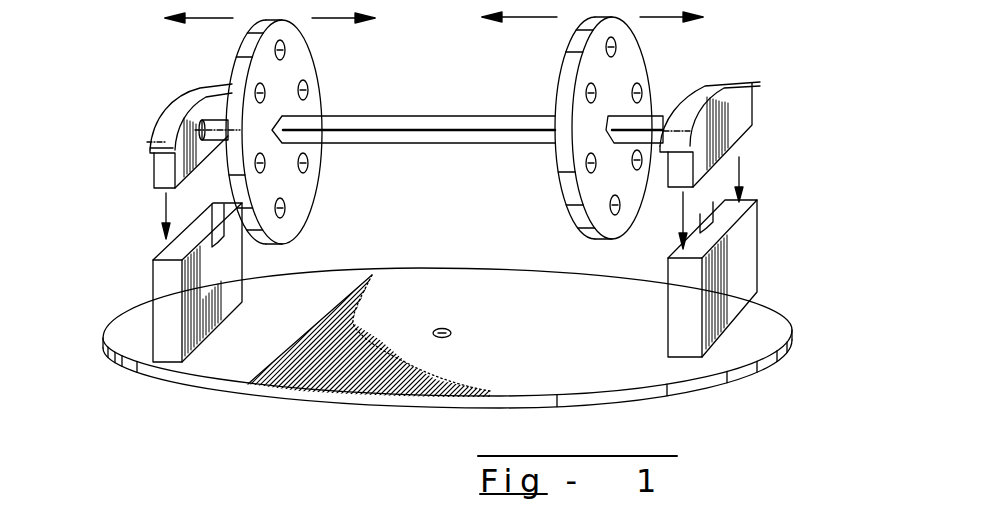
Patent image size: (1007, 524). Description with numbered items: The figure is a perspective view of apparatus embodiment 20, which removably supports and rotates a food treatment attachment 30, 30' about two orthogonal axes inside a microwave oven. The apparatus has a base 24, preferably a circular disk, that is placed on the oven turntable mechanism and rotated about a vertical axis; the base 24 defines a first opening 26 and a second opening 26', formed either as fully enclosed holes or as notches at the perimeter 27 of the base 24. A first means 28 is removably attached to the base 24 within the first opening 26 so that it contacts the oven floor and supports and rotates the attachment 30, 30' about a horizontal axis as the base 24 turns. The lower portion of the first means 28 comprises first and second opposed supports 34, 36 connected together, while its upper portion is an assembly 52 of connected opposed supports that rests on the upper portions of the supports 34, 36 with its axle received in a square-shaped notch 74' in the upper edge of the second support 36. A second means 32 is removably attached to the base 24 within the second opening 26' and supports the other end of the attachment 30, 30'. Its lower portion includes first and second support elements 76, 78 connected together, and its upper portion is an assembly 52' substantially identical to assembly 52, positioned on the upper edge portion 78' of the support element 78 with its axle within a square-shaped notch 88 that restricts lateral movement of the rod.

The apparatus embodiment 20 is at (778, 242).
The base 24 is at (645, 357).
The first opening 26 is at (705, 350).
The second opening 26' is at (155, 399).
The perimeter 27 is at (422, 410).
The first means 28 is at (738, 113).
The food treatment attachment 30 is at (473, 123).
The food treatment attachment 30' is at (756, 518).
The second means 32 is at (152, 142).
The first opposed support 34 is at (755, 292).
The second opposed support 36 is at (668, 255).
The assembly 52 is at (731, 106).
The assembly 52' is at (182, 121).
The square-shaped notch 74' is at (749, 192).
The first support element 76 is at (153, 295).
The second support element 78 is at (375, 312).
The upper edge portion 78' is at (415, 333).
The square-shaped notch 88 is at (226, 204).